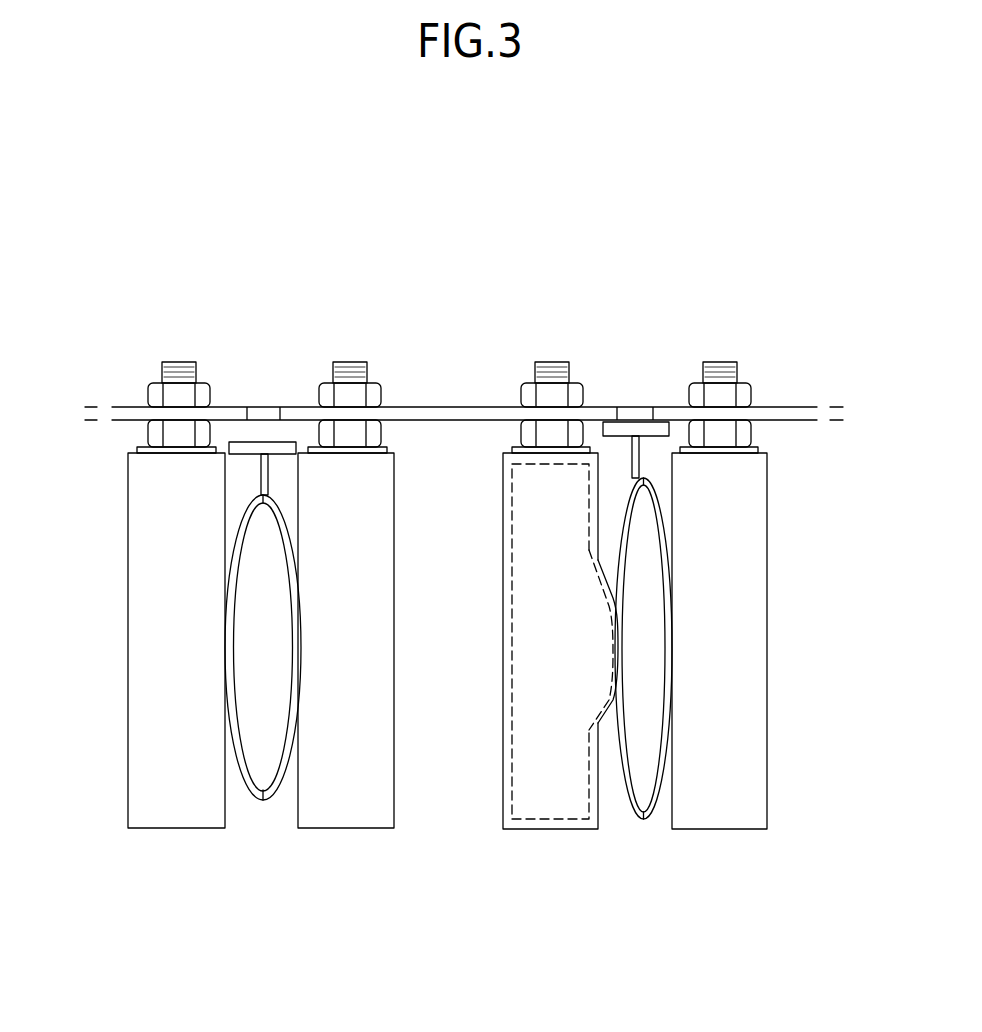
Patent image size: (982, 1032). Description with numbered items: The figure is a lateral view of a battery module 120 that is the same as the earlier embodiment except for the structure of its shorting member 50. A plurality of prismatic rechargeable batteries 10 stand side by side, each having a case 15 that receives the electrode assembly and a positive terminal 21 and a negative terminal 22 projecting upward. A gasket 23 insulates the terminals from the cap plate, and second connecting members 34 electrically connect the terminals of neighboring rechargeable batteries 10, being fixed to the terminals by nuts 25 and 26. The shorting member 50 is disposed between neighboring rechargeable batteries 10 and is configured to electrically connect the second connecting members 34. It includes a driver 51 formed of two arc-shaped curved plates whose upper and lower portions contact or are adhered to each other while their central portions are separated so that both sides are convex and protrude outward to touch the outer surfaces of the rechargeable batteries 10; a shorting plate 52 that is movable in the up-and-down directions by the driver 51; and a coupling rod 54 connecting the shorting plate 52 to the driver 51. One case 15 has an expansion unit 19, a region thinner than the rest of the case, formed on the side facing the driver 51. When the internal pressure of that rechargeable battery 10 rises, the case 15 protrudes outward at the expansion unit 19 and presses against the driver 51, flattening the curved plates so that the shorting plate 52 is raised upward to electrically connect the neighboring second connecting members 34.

The battery module 120 is at (649, 214).
The rechargeable battery 10 is at (159, 859).
The case 15 is at (545, 829).
The expansion unit 19 is at (610, 673).
The positive terminal 21 is at (350, 363).
The negative terminal 22 is at (550, 370).
The gasket 23 is at (140, 450).
The nut 25 is at (157, 433).
The nut 26 is at (325, 395).
The second connecting member 34 is at (443, 413).
The shorting member 50 is at (266, 831).
The driver 51 is at (228, 655).
The shorting plate 52 is at (243, 447).
The coupling rod 54 is at (262, 465).